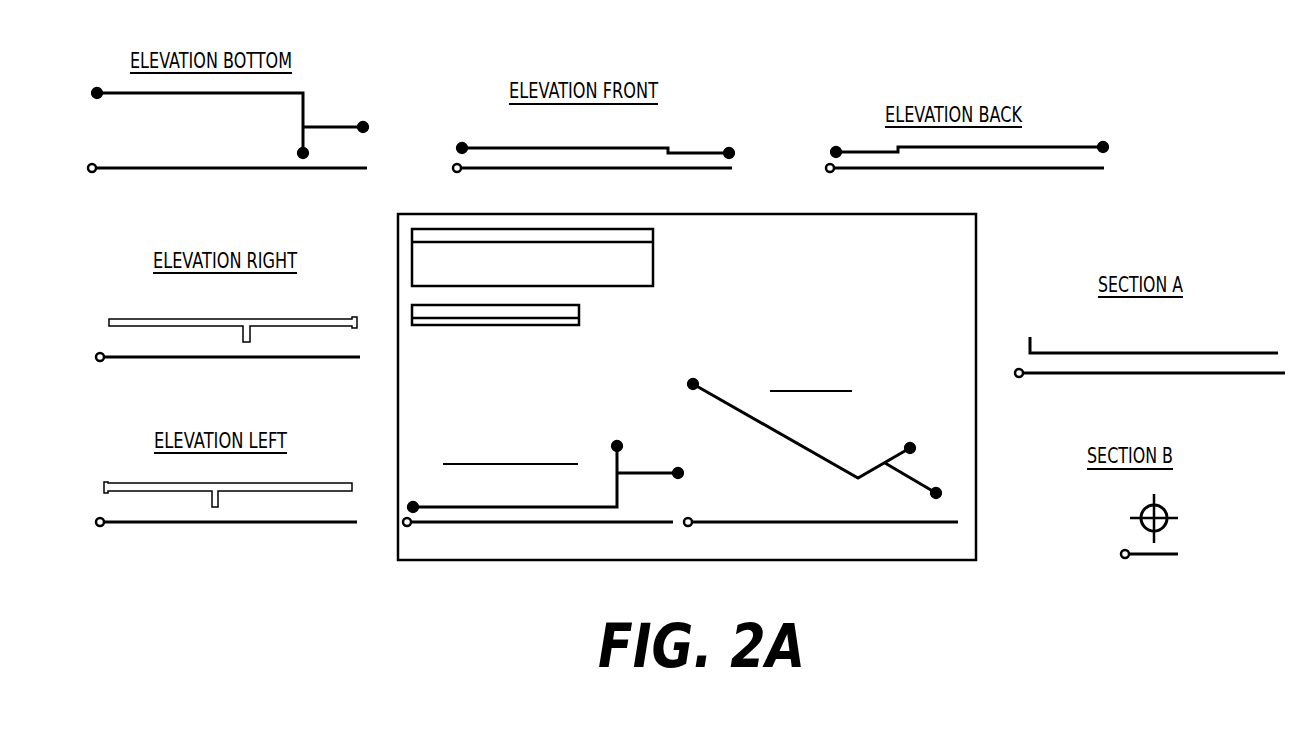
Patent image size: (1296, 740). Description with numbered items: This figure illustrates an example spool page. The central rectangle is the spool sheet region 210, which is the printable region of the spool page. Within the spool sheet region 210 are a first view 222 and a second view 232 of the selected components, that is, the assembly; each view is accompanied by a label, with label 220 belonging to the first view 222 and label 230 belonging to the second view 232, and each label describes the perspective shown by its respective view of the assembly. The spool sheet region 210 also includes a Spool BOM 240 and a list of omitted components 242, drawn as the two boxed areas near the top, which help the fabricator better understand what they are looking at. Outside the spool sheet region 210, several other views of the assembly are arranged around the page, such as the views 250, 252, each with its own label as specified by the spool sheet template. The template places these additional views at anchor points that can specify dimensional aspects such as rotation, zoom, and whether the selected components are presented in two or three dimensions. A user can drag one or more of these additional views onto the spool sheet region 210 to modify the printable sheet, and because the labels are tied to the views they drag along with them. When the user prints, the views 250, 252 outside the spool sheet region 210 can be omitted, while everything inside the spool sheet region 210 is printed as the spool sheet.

The spool sheet region 210 is at (976, 518).
The label 220 is at (822, 367).
The first view 222 is at (910, 447).
The label 230 is at (540, 438).
The second view 232 is at (647, 470).
The Spool BOM 240 is at (653, 260).
The list of omitted components 242 is at (579, 317).
The view 250 is at (1240, 352).
The view 252 is at (1077, 147).